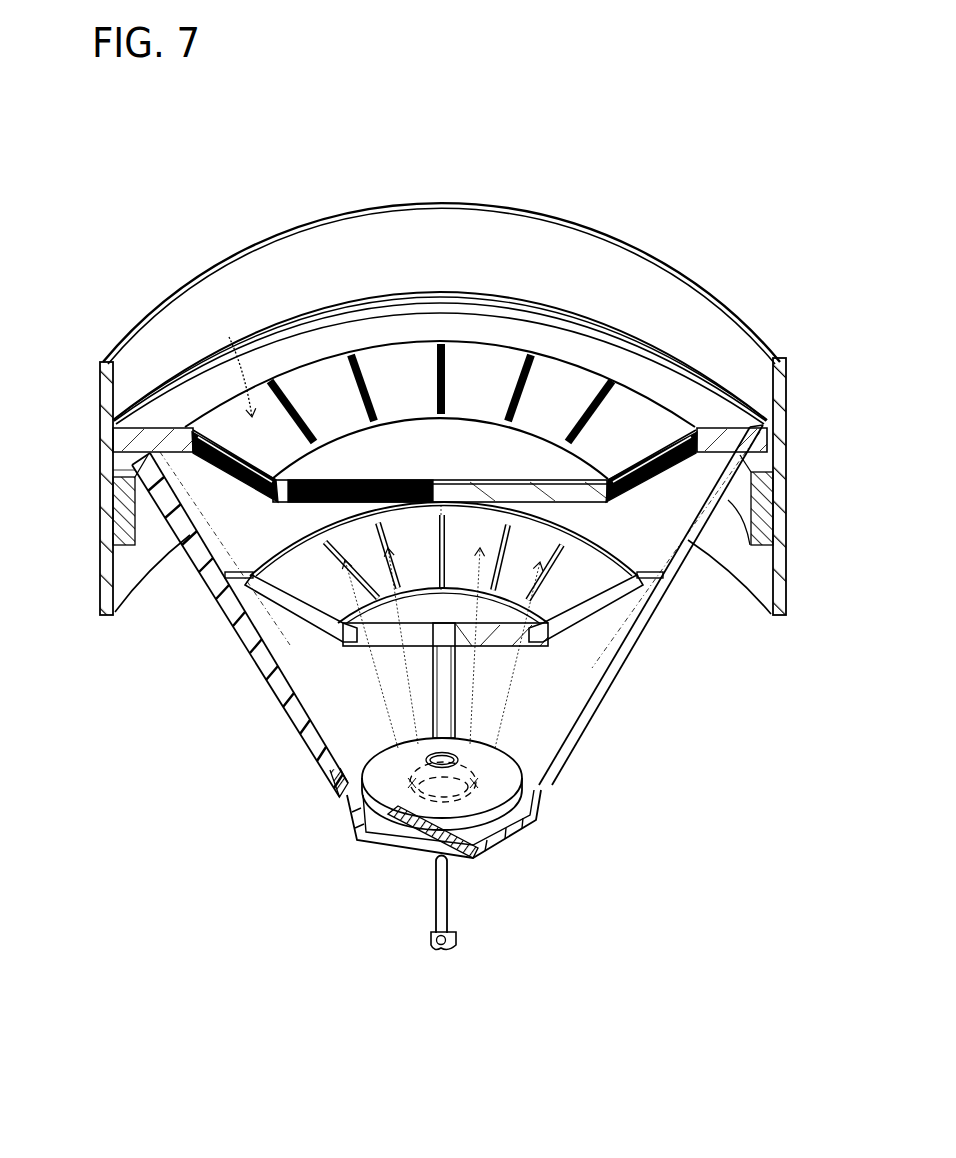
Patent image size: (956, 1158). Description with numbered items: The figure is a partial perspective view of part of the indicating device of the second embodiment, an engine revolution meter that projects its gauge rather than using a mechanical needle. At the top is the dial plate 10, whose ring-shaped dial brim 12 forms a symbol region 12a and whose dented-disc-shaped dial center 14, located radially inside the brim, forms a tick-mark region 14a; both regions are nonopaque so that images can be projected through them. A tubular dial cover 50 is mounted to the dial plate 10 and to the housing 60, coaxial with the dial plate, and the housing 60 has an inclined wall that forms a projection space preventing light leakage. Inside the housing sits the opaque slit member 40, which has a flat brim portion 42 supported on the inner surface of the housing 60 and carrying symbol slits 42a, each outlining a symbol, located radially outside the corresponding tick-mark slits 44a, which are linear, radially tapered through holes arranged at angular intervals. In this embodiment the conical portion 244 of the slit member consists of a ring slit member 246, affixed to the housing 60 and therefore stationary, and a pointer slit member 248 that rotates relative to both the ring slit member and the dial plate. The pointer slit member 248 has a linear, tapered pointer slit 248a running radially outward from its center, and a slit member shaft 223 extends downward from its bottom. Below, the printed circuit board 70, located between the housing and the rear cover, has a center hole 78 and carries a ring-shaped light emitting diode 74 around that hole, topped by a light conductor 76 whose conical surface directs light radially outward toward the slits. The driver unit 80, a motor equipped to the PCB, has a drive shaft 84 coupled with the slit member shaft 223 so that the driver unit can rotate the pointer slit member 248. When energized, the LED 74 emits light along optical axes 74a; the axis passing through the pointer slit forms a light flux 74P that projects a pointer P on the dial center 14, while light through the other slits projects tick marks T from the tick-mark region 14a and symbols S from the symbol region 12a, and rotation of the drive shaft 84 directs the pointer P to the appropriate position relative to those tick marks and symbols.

The dial plate 10 is at (557, 291).
The dial cover 50 is at (753, 321).
The housing 60 is at (758, 617).
The dial center 14 is at (582, 371).
The tick-mark region 14a is at (195, 401).
The dial brim 12 is at (677, 389).
The symbol region 12a is at (161, 410).
The symbols S is at (158, 409).
The tick marks T is at (283, 381).
The pointer P is at (379, 470).
The tick-mark slits 44a is at (307, 522).
The conical portion 244 is at (583, 575).
The pointer slit 248a is at (419, 627).
The pointer slit member 248 is at (475, 646).
The slit member shaft 223 is at (455, 708).
The symbol slits 42a is at (232, 592).
The brim portion 42 is at (647, 590).
The slit member 40 is at (583, 628).
The ring slit member 246 is at (558, 629).
The optical axes 74a is at (283, 707).
The light flux 74P is at (262, 642).
The light emitting diode 74 is at (437, 843).
The printed circuit board 70 is at (550, 806).
The light conductor 76 is at (372, 780).
The center hole 78 is at (470, 800).
The drive shaft 84 is at (449, 895).
The driver unit 80 is at (468, 944).